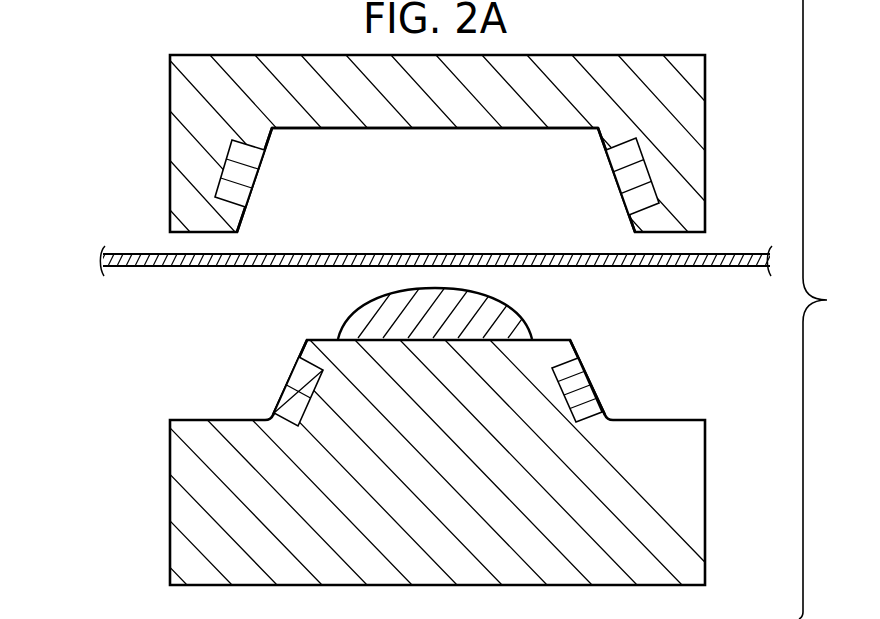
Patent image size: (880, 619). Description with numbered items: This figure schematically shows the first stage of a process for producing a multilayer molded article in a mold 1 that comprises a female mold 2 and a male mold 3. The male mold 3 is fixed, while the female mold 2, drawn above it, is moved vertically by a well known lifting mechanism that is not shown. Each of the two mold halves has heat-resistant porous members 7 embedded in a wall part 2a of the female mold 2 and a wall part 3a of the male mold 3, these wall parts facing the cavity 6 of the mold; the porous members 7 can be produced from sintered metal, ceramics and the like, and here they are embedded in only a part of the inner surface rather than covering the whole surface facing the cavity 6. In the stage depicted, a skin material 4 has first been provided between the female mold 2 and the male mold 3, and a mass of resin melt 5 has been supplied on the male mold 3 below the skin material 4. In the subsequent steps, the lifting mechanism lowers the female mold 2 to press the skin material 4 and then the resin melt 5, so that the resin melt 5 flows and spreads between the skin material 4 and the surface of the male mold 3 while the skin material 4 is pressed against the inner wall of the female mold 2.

The mold 1 is at (109, 203).
The female mold 2 is at (677, 100).
The wall part of the female mold 2a is at (243, 206).
The male mold 3 is at (680, 522).
The wall part of the male mold 3a is at (307, 340).
The skin material 4 is at (745, 268).
The resin melt 5 is at (385, 325).
The cavity 6 is at (447, 219).
The heat-resistant porous members 7 is at (230, 176).